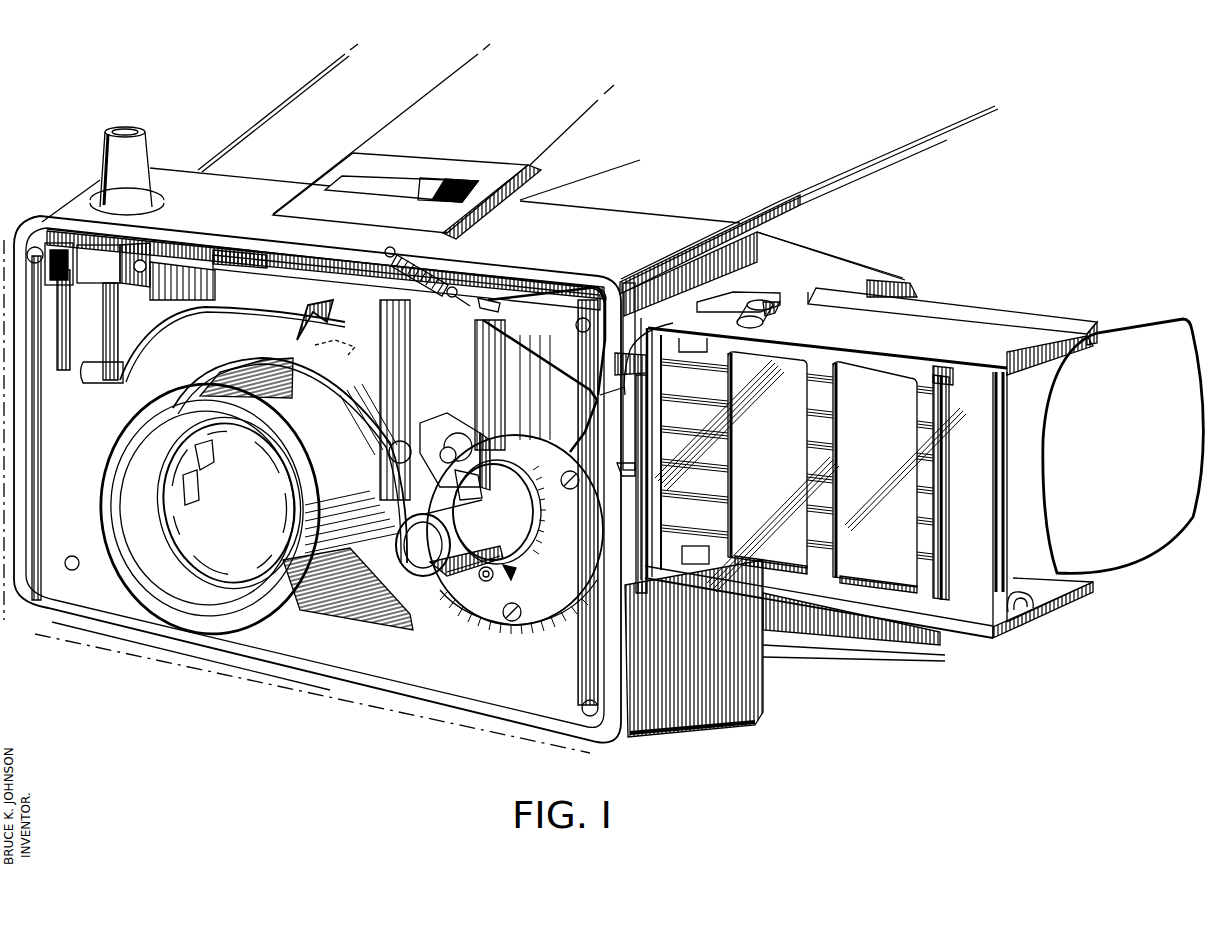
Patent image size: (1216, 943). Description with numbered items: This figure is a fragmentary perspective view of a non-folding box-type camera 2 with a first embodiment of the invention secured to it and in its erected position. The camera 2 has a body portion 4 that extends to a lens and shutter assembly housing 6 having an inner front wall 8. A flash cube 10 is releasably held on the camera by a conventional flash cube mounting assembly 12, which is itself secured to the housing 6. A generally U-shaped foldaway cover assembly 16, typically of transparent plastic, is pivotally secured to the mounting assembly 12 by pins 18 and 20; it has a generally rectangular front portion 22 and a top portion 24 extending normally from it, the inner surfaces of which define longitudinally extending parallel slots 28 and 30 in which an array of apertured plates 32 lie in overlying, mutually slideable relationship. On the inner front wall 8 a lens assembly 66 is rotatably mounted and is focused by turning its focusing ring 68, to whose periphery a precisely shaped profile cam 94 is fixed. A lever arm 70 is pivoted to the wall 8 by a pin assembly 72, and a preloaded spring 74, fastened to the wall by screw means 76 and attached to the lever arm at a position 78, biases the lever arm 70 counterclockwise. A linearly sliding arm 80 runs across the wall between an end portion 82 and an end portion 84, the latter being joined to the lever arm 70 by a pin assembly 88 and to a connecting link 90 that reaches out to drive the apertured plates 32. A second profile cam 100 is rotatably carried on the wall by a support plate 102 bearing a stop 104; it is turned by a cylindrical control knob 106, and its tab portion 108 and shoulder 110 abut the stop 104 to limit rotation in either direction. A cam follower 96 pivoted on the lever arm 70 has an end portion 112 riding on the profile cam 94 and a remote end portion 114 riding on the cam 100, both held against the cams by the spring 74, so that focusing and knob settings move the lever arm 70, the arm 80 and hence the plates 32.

The camera 2 is at (928, 183).
The body portion 4 is at (718, 177).
The lens and shutter assembly housing 6 is at (582, 239).
The inner front wall 8 is at (530, 682).
The flash cube 10 is at (1113, 330).
The flash cube mounting assembly 12 is at (865, 280).
The foldaway cover assembly 16 is at (1031, 634).
The pin 18 is at (753, 320).
The pin 20 is at (1062, 608).
The front portion 22 is at (980, 595).
The top portion 24 is at (965, 347).
The slot 28 is at (1015, 380).
The slot 30 is at (1012, 595).
The array of apertured plates 32 is at (964, 466).
The lens assembly 66 is at (204, 600).
The focusing ring 68 is at (228, 382).
The lever arm 70 is at (537, 320).
The pin assembly 72 is at (462, 472).
The spring 74 is at (447, 280).
The screw means 76 is at (392, 265).
The position 78 is at (490, 312).
The arm 80 is at (248, 297).
The end portion 82 is at (150, 313).
The end portion 84 is at (605, 397).
The pin assembly 88 is at (572, 333).
The connecting link 90 is at (633, 340).
The profile cam 94 is at (337, 397).
The cam follower 96 is at (447, 388).
The second profile cam 100 is at (513, 527).
The support plate 102 is at (567, 606).
The stop 104 is at (489, 579).
The control knob 106 is at (450, 597).
The tab portion 108 is at (513, 567).
The shoulder 110 is at (412, 481).
The end portion 112 is at (297, 350).
The end portion 114 is at (527, 505).